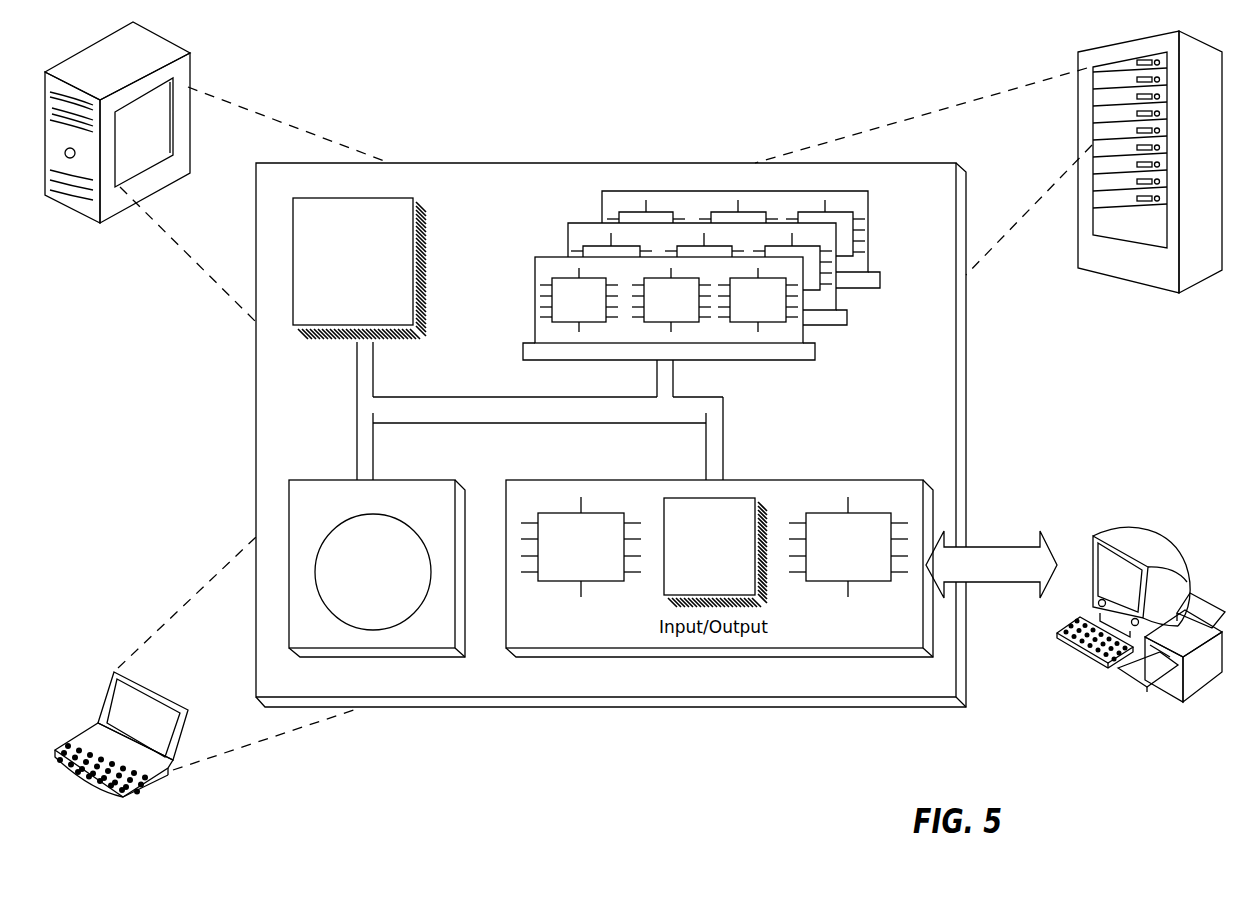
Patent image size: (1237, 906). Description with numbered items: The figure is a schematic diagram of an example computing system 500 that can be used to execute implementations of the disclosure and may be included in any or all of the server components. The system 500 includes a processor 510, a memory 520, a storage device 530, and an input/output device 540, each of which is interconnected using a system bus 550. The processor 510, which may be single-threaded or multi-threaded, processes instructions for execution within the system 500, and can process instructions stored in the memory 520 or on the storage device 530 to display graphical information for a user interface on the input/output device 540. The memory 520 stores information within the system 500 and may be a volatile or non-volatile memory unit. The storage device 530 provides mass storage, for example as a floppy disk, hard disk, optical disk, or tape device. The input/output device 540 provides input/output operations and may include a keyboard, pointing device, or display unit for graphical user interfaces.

The computing system 500 is at (443, 90).
The processor 510 is at (405, 316).
The memory 520 is at (878, 326).
The storage device 530 is at (447, 641).
The input/output device 540 is at (1092, 537).
The system bus 550 is at (535, 413).